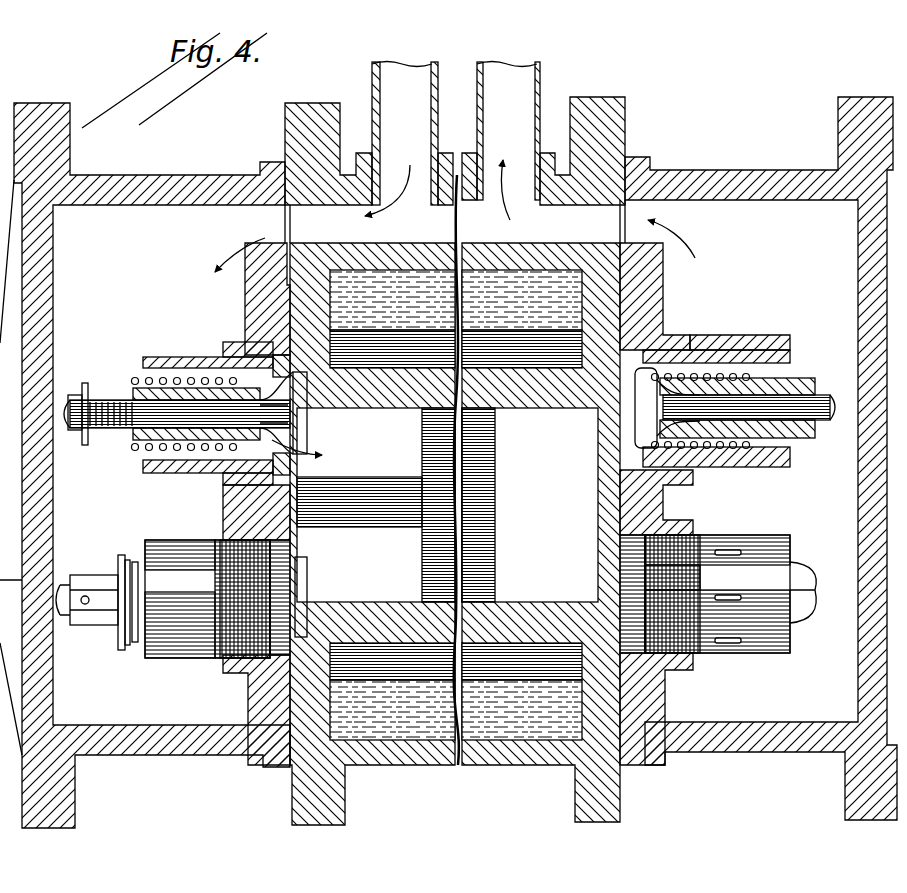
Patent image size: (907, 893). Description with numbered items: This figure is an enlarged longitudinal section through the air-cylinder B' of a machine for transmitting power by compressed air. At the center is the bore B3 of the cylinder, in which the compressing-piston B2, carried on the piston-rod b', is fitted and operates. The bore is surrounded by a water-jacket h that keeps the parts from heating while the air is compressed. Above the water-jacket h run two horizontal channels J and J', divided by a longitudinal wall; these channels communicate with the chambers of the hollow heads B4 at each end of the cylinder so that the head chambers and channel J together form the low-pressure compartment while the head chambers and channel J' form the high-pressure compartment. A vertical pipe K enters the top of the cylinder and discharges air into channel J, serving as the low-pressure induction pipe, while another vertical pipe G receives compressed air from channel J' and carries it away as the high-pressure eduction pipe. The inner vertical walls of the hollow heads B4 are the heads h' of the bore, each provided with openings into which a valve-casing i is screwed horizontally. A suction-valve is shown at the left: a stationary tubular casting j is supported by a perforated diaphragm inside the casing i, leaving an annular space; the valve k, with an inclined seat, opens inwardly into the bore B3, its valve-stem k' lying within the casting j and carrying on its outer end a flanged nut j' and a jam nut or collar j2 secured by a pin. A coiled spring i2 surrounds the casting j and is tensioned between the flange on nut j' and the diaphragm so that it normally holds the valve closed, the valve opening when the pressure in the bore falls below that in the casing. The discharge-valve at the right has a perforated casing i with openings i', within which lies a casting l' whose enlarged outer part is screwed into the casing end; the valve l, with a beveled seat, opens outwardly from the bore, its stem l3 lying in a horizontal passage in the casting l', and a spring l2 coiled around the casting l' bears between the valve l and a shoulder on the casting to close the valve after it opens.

The hollow head B4 is at (160, 172).
The air-cylinder B' is at (761, 458).
The compressing-piston B2 is at (490, 482).
The bore of the cylinder B3 is at (530, 578).
The vertical pipe K is at (405, 118).
The vertical pipe G is at (508, 131).
The horizontal channel J is at (334, 187).
The horizontal channel J' is at (578, 177).
The water-jacket h is at (456, 538).
The head of the bore h' is at (453, 504).
The valve-casing i is at (466, 498).
The opening i' is at (467, 501).
The coiled spring i2 is at (140, 380).
The stationary tubular casting j is at (177, 446).
The nut j' is at (97, 398).
The jam nut or collar j2 is at (74, 392).
The valve k is at (296, 504).
The valve-stem k' is at (261, 417).
The piston-rod b' is at (359, 522).
The valve l is at (649, 410).
The casting l' is at (755, 453).
The spring l2 is at (718, 450).
The stem l3 is at (836, 606).